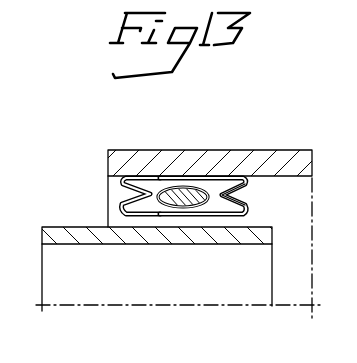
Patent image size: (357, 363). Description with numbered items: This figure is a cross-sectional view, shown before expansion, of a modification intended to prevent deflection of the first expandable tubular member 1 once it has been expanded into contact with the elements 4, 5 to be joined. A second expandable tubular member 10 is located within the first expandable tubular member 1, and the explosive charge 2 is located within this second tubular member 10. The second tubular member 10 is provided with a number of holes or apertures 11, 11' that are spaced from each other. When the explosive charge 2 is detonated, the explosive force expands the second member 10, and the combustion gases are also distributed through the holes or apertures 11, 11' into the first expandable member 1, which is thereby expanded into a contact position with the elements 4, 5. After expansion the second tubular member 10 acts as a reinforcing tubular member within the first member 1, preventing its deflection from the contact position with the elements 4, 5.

The first expandable tubular member 1 is at (165, 169).
The explosive charge 2 is at (183, 188).
The element to be joined 4 is at (270, 166).
The element to be joined 5 is at (58, 234).
The second expandable tubular member 10 is at (222, 195).
The hole or aperture 11 is at (143, 169).
The hole or aperture 11' is at (203, 169).